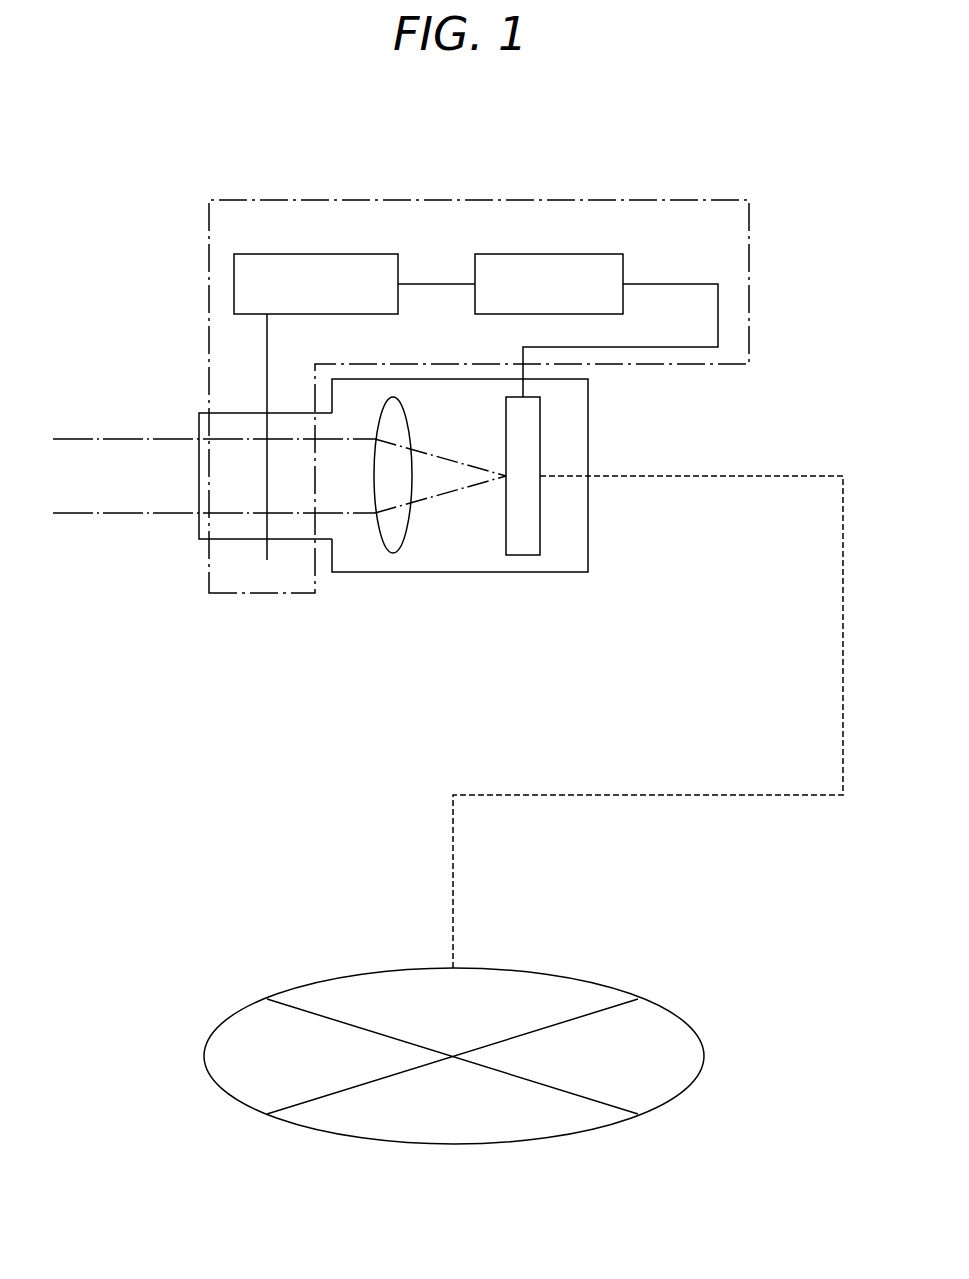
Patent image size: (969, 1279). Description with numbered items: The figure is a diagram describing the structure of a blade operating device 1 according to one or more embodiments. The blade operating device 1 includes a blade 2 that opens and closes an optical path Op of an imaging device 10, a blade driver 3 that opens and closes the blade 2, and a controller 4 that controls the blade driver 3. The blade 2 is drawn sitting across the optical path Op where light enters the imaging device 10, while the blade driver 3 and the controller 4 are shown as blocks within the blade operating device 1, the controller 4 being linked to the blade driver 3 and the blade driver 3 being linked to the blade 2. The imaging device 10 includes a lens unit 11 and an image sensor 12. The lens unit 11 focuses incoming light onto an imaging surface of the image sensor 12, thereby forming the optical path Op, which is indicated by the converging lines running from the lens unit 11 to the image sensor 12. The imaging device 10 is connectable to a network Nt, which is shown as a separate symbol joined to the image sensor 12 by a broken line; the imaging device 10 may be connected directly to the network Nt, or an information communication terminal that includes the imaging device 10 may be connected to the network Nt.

The blade operating device 1 is at (657, 197).
The blade 2 is at (268, 560).
The blade driver 3 is at (324, 254).
The controller 4 is at (552, 254).
The imaging device 10 is at (473, 589).
The lens unit 11 is at (393, 553).
The image sensor 12 is at (523, 555).
The optical path Op is at (120, 428).
The network Nt is at (710, 1008).